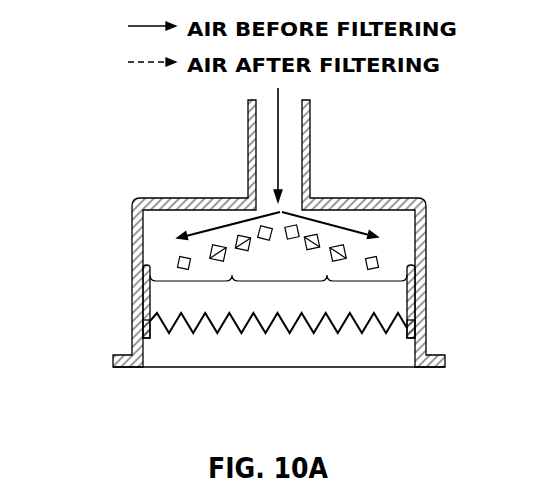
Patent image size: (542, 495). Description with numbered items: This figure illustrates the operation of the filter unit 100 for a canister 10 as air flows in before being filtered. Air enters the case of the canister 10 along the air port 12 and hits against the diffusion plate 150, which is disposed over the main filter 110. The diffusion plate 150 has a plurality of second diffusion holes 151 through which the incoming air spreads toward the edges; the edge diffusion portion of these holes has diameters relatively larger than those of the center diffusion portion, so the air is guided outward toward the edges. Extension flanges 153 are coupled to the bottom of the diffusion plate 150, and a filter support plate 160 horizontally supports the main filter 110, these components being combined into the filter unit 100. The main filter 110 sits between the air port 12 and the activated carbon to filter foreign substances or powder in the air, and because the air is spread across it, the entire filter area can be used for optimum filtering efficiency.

The canister 10 is at (112, 191).
The air port 12 is at (248, 147).
The filter unit 100 is at (152, 252).
The main filter 110 is at (325, 328).
The diffusion plate 150 is at (341, 247).
The second diffusion holes 151 is at (361, 255).
The extension flanges 153 is at (413, 287).
The filter support plate 160 is at (426, 323).